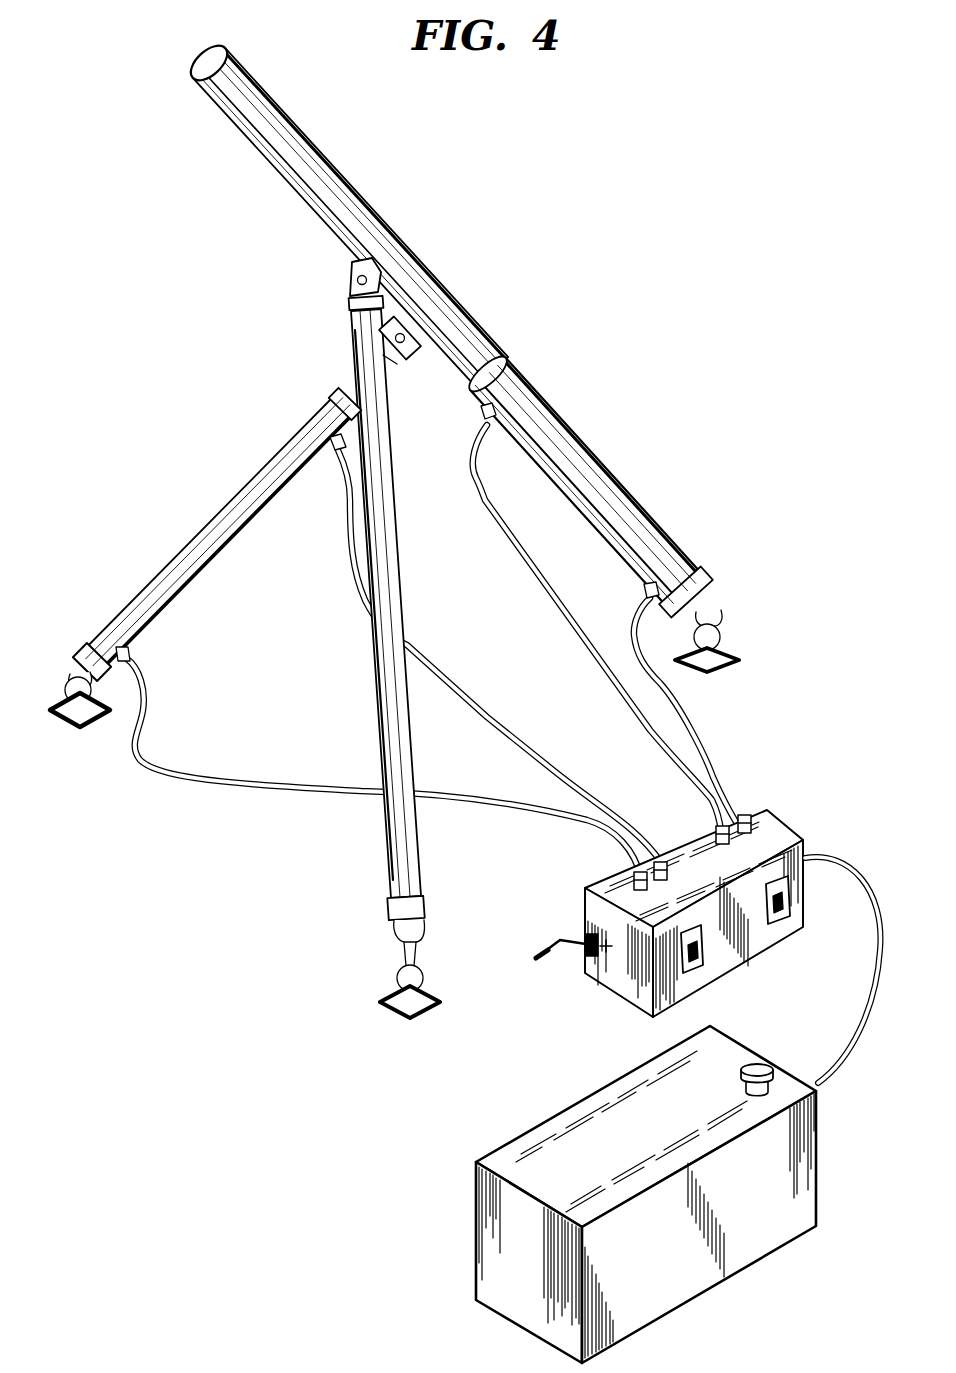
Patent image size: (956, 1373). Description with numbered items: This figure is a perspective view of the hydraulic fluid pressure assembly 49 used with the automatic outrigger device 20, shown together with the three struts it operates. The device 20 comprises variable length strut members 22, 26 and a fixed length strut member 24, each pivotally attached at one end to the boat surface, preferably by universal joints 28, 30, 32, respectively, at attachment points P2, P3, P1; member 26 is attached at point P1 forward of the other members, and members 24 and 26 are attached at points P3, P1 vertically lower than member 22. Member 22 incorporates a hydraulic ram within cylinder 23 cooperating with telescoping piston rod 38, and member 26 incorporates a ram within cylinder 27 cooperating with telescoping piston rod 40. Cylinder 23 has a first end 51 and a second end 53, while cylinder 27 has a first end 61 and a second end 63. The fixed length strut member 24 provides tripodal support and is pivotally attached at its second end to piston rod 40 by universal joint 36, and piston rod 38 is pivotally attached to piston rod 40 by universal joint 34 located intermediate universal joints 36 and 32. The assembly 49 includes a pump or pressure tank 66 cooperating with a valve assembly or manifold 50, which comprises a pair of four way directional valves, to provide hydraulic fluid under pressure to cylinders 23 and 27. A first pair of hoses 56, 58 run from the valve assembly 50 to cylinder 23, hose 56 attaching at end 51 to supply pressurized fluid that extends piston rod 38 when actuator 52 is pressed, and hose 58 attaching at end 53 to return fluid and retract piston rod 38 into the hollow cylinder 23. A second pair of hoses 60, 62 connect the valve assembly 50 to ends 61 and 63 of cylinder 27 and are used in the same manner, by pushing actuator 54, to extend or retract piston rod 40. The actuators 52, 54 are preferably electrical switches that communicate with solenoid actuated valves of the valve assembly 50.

The automatic outrigger device 20 is at (648, 325).
The variable length strut member 22 is at (193, 507).
The cylinder 23 is at (265, 485).
The fixed length strut member 24 is at (389, 734).
The variable length strut member 26 is at (650, 488).
The cylinder 27 is at (650, 545).
The universal joint 28 is at (88, 722).
The universal joint 30 is at (430, 970).
The universal joint 32 is at (718, 628).
The universal joint 34 is at (408, 322).
The universal joint 36 is at (352, 272).
The telescoping piston rod 38 is at (397, 360).
The telescoping piston rod 40 is at (290, 135).
The hydraulic fluid pressure assembly 49 is at (595, 1003).
The valve assembly 50 is at (747, 943).
The first end of cylinder 23 51 is at (132, 654).
The actuator 52 is at (703, 968).
The second end of cylinder 23 53 is at (315, 418).
The actuator 54 is at (790, 915).
The hose 56 is at (315, 800).
The hose 58 is at (492, 708).
The hose 60 is at (712, 747).
The first end of cylinder 27 61 is at (642, 591).
The hose 62 is at (476, 495).
The second end of cylinder 27 63 is at (493, 412).
The pump or pressure tank 66 is at (732, 1238).
The attachment point P1 is at (700, 670).
The attachment point P2 is at (63, 720).
The attachment point P3 is at (430, 1012).